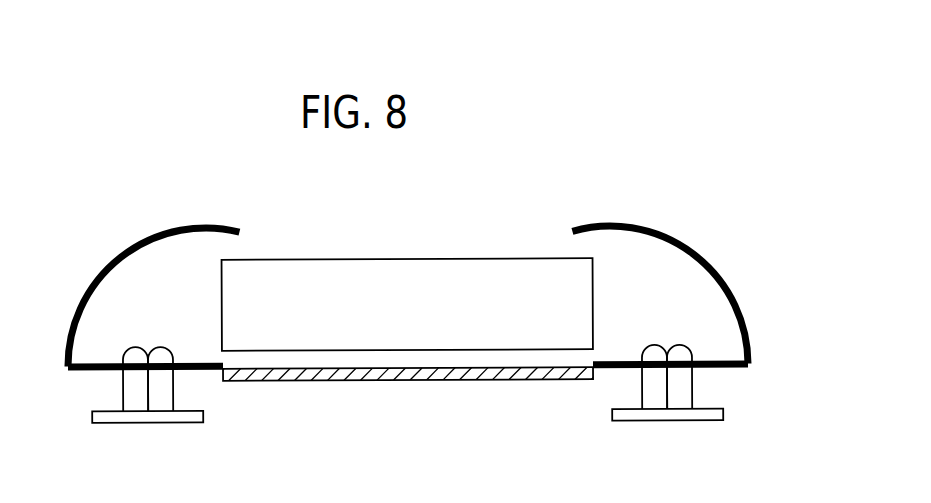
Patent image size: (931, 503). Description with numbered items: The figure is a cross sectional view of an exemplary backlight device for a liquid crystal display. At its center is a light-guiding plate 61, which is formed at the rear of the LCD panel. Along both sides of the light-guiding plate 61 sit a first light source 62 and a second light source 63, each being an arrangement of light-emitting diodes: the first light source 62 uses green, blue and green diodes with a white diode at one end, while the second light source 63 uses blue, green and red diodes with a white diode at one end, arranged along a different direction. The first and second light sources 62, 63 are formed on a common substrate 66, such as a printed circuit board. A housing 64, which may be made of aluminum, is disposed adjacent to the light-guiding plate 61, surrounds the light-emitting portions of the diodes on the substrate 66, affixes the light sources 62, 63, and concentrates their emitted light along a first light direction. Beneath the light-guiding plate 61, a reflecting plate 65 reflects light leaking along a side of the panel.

The light-guiding plate 61 is at (502, 272).
The first light source 62 is at (126, 388).
The second light source 63 is at (170, 388).
The housing 64 is at (713, 280).
The reflecting plate 65 is at (463, 376).
The substrate 66 is at (160, 422).